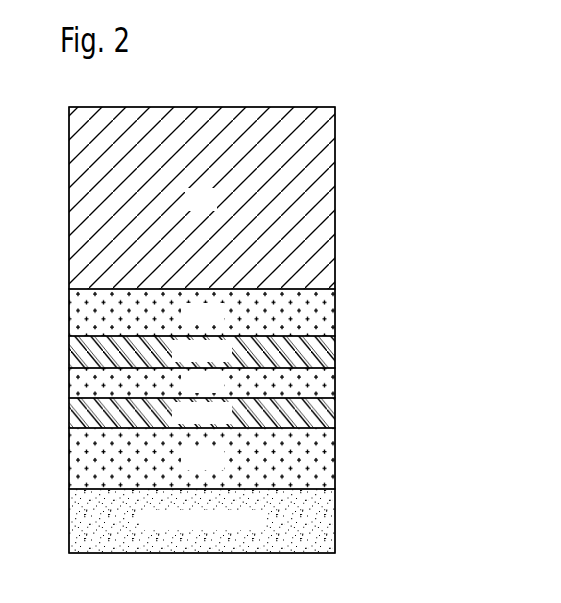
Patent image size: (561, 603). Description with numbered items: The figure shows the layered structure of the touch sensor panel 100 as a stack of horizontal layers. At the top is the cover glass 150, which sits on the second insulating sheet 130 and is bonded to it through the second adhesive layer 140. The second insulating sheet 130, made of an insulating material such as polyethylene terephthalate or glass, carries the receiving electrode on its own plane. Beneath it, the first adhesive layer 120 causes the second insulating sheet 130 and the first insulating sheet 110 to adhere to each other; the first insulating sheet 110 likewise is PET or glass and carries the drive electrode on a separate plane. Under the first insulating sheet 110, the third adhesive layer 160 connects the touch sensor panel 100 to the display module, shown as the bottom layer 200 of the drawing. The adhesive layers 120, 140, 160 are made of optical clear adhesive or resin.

The touch sensor panel 100 is at (410, 198).
The cover glass 150 is at (335, 198).
The second adhesive layer 140 is at (335, 312).
The second insulating sheet 130 is at (335, 352).
The first adhesive layer 120 is at (335, 382).
The first insulating sheet 110 is at (335, 412).
The third adhesive layer 160 is at (335, 458).
The LCM / full lamination display module 200 is at (335, 520).